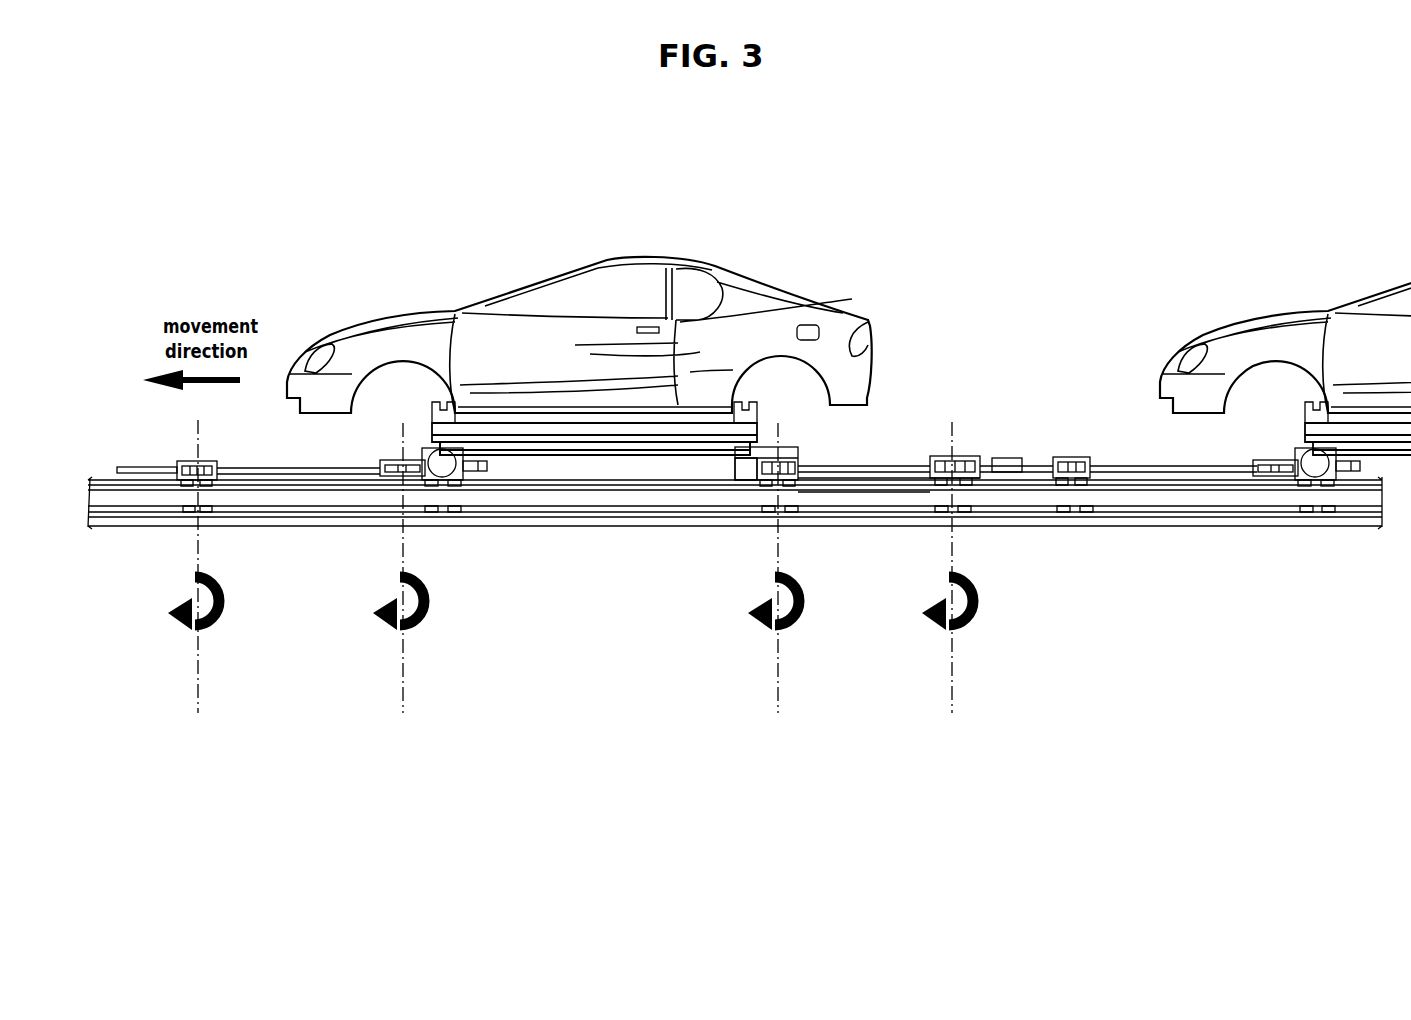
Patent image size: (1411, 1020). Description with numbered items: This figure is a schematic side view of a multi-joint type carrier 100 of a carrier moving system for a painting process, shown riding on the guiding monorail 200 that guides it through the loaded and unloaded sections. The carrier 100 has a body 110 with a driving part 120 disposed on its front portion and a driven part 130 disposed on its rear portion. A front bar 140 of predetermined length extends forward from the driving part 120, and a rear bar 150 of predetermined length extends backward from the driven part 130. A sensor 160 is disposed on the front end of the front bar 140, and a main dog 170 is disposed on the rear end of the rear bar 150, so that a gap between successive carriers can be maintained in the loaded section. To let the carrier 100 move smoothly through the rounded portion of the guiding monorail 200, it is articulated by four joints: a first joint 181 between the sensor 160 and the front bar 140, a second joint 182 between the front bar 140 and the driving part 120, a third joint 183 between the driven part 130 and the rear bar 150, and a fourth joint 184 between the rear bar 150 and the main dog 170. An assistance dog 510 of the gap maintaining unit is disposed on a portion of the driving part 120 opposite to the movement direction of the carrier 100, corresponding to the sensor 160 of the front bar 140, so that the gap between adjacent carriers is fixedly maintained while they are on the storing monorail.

The multi-joint type carrier 100 is at (587, 468).
The body 110 is at (513, 460).
The driving part 120 is at (445, 482).
The driven part 130 is at (735, 465).
The front bar 140 is at (268, 467).
The rear bar 150 is at (864, 469).
The sensor 160 is at (152, 466).
The main dog 170 is at (987, 480).
The first joint 181 is at (207, 460).
The second joint 182 is at (392, 460).
The third joint 183 is at (795, 461).
The fourth joint 184 is at (940, 456).
The guiding monorail 200 is at (294, 512).
The assistance dog 510 is at (482, 462).